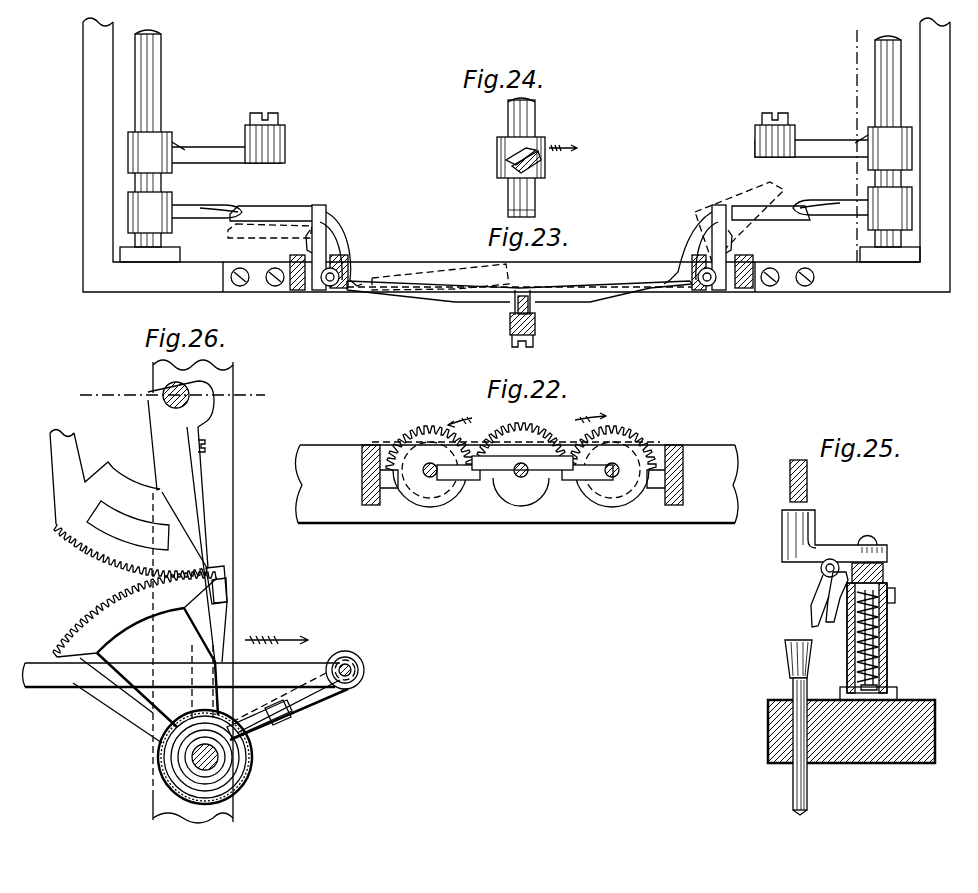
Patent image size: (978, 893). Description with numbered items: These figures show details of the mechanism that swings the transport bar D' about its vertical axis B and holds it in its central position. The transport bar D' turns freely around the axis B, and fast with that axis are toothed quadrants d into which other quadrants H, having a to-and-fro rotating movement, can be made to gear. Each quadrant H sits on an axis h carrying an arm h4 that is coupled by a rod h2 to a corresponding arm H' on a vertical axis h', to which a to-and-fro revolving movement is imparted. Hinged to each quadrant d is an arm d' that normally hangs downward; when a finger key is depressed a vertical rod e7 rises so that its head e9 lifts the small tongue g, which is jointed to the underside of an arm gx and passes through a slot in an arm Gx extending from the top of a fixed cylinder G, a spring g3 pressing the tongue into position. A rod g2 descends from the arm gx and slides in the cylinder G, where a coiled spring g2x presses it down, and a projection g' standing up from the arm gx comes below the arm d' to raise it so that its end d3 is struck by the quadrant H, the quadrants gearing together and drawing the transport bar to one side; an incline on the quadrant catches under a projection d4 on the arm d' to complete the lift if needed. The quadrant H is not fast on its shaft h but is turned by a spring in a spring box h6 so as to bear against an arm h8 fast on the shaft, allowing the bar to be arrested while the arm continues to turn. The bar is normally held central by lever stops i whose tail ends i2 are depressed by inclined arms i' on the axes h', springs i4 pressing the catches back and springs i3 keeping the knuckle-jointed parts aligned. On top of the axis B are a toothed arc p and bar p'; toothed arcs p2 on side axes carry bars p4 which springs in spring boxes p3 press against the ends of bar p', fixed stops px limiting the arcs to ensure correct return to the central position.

In FIG. 23, the vertical axis h' is at (518, 138).
In FIG. 24, the vertical axis h' is at (535, 153).
In FIG. 23, the arm H' is at (520, 139).
In FIG. 23, the rod h2 is at (285, 137).
In FIG. 26, the rod h2 is at (130, 683).
In FIG. 23, the arm i' is at (520, 197).
In FIG. 24, the arm i' is at (507, 157).
In FIG. 23, the tail end of lever i2 is at (270, 211).
In FIG. 24, the tail end of lever i2 is at (545, 165).
In FIG. 23, the spring i3 is at (342, 243).
In FIG. 23, the spring i4 is at (306, 240).
In FIG. 23, the lever stop i is at (519, 297).
In FIG. 23, the transport bar D' is at (536, 318).
In FIG. 22, the toothed arc p is at (521, 454).
In FIG. 22, the toothed arc p2 is at (418, 432).
In FIG. 22, the bar p' is at (522, 472).
In FIG. 22, the spring box p3 is at (431, 500).
In FIG. 22, the bar p4 is at (468, 480).
In FIG. 22, the fixed stop px is at (390, 484).
In FIG. 22, the vertical axis B is at (520, 478).
In FIG. 26, the vertical axis B is at (165, 402).
In FIG. 26, the toothed quadrant d is at (127, 488).
In FIG. 26, the arm d' is at (187, 550).
In FIG. 25, the arm d' is at (809, 481).
In FIG. 26, the end of arm d' d3 is at (208, 571).
In FIG. 26, the projection d4 is at (227, 598).
In FIG. 26, the toothed quadrant H is at (135, 657).
In FIG. 26, the axis of quadrant H h is at (217, 757).
In FIG. 26, the arm h4 is at (326, 690).
In FIG. 26, the spring box h6 is at (168, 787).
In FIG. 26, the arm h8 is at (279, 715).
In FIG. 25, the projection g' is at (834, 536).
In FIG. 25, the arm gx is at (838, 556).
In FIG. 25, the fixed cylinder G is at (878, 637).
In FIG. 25, the arm Gx is at (819, 588).
In FIG. 25, the small tongue g is at (808, 601).
In FIG. 25, the spring g3 is at (836, 606).
In FIG. 25, the rod g2 is at (887, 660).
In FIG. 25, the coiled spring g2x is at (887, 638).
In FIG. 25, the head of rod e9 is at (788, 652).
In FIG. 25, the vertical rod e7 is at (805, 787).